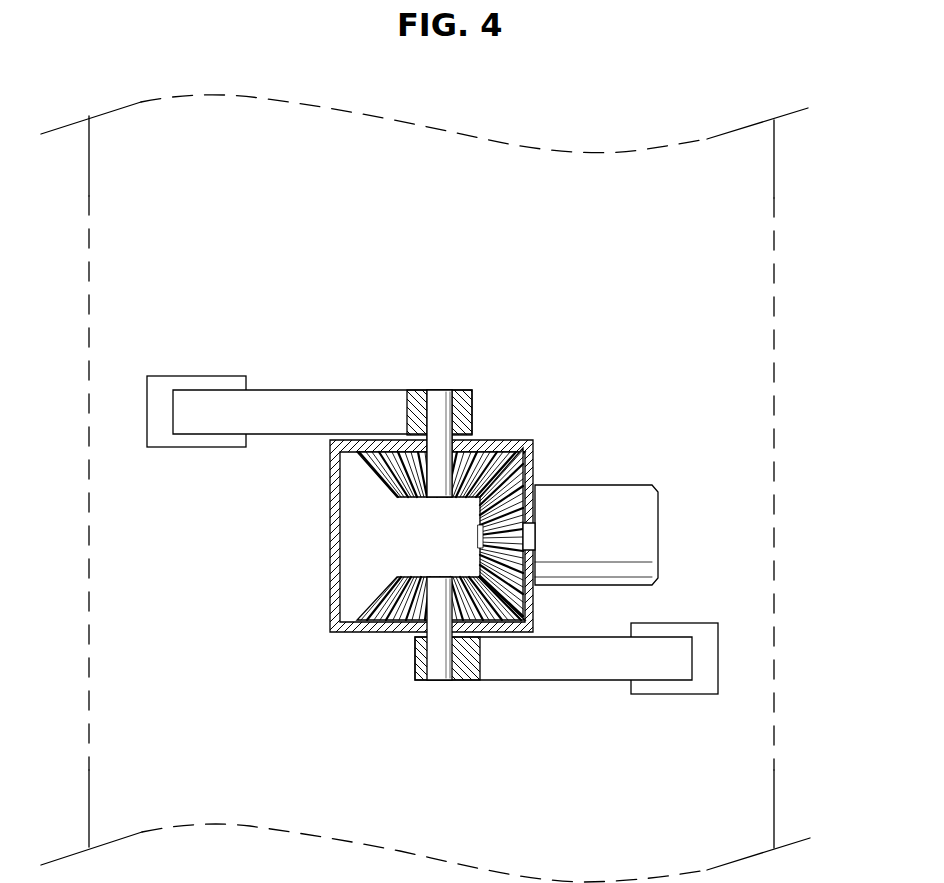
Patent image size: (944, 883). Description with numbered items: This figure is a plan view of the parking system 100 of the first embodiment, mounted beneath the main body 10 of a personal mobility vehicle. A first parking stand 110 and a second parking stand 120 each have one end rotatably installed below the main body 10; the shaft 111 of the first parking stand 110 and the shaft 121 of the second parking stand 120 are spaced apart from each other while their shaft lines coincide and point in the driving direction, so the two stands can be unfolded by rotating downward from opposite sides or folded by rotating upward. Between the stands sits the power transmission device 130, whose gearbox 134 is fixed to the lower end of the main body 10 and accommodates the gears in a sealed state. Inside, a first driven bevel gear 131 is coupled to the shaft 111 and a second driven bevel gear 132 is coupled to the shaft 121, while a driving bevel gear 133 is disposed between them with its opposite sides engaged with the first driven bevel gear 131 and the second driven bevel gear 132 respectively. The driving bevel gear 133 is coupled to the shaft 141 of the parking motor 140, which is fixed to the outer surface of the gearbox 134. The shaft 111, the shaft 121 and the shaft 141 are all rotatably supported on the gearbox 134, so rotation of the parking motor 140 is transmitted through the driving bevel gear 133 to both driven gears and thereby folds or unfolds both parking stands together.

The main body 10 is at (774, 254).
The parking system 100 is at (445, 372).
The first parking stand 110 is at (291, 398).
The shaft 111 is at (438, 398).
The second parking stand 120 is at (572, 668).
The shaft 121 is at (437, 672).
The power transmission device 130 is at (328, 627).
The first driven bevel gear 131 is at (380, 477).
The second driven bevel gear 132 is at (380, 590).
The driving bevel gear 133 is at (535, 485).
The gearbox 134 is at (330, 527).
The parking motor 140 is at (638, 505).
The shaft 141 is at (528, 540).